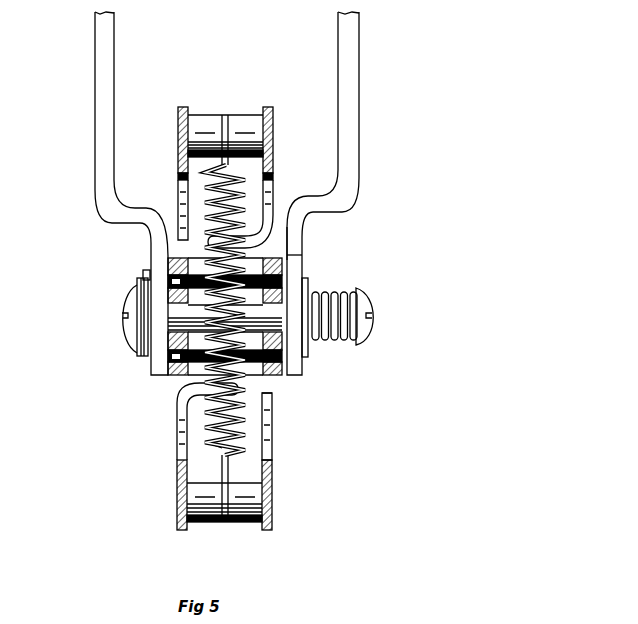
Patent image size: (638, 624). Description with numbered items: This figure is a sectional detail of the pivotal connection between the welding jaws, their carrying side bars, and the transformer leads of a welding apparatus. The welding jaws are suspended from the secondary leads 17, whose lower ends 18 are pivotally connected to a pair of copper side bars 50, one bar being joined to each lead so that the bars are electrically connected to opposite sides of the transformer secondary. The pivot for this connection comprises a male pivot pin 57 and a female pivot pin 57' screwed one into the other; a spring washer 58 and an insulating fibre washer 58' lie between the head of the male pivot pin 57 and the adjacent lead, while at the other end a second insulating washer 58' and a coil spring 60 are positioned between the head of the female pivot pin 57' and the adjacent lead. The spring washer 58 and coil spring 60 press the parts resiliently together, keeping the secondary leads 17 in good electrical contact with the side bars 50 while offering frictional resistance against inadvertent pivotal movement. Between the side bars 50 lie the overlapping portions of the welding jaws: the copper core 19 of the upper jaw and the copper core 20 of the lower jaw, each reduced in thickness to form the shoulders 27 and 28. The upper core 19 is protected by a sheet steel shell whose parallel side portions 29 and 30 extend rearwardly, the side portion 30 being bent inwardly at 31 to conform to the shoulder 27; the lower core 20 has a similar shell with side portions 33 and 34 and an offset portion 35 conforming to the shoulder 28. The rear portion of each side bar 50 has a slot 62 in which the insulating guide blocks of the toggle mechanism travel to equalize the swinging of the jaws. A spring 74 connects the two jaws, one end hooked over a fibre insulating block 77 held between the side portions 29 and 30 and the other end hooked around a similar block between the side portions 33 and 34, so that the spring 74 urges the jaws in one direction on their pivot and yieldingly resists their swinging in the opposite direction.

The secondary leads 17 is at (105, 144).
The lower ends of the secondary leads 18 is at (168, 247).
The copper core of the upper welding jaw 19 is at (247, 204).
The copper core of the lower welding jaw 20 is at (242, 452).
The shoulder 27 is at (268, 231).
The shoulder 28 is at (200, 440).
The side portion of the upper protecting shell 29 is at (178, 152).
The side portion of the upper protecting shell 30 is at (273, 156).
The inwardly bent portion 31 is at (180, 385).
The side portion of the lower protecting shell 33 is at (176, 485).
The side portion of the lower protecting shell 34 is at (272, 485).
The offset portion 35 is at (292, 256).
The copper side bars 50 is at (275, 392).
The male pivot pin 57 is at (111, 319).
The female pivot pin 57' is at (394, 316).
The spring washer 58 is at (114, 333).
The insulating fibre washer 58' is at (215, 310).
The coil spring 60 is at (343, 342).
The slot 62 is at (183, 320).
The spring 74 is at (232, 430).
The fibre insulating block 77 is at (203, 130).